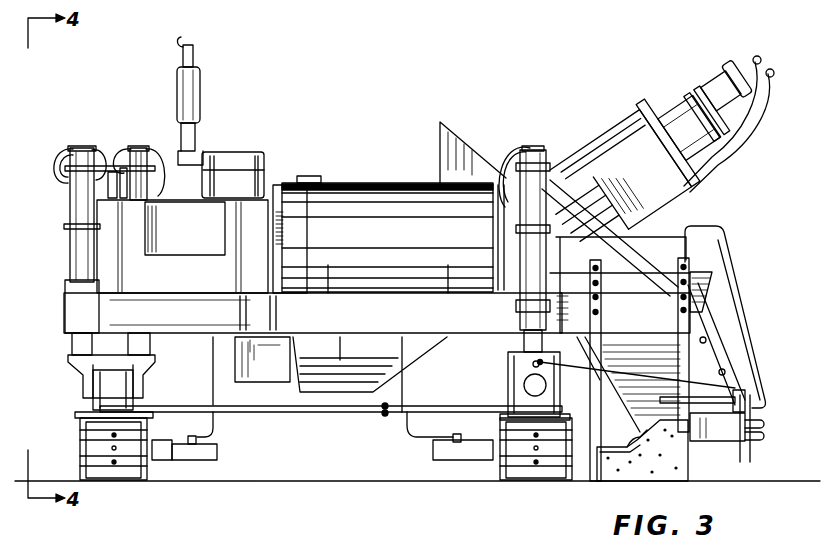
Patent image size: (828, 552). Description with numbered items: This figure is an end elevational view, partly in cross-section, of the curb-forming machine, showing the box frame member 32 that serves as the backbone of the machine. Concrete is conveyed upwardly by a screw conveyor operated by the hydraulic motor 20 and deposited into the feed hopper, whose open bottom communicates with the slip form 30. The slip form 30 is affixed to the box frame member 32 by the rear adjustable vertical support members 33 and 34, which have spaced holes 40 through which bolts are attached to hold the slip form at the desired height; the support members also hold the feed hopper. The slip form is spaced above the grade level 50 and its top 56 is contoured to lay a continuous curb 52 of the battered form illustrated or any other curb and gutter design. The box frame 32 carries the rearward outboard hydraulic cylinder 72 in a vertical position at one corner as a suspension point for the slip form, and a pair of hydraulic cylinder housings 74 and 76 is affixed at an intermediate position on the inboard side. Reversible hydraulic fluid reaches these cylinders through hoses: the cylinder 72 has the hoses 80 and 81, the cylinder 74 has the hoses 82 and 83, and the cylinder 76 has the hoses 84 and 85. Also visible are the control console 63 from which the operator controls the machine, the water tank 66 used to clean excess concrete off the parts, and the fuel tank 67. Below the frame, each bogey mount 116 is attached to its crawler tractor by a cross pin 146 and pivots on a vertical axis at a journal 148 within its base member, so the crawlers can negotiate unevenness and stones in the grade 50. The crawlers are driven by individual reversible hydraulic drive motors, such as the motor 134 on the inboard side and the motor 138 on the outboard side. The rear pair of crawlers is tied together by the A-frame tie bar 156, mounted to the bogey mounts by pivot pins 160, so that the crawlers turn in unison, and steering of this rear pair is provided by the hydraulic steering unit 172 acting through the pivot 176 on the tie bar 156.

The hydraulic motor 20 is at (742, 70).
The slip form 30 is at (690, 455).
The box frame member 32 is at (279, 318).
The adjustable vertical support member 33 is at (604, 266).
The adjustable vertical support member 34 is at (690, 264).
The spaced holes 40 is at (692, 301).
The grade level 50 is at (338, 481).
The continuous curb 52 is at (661, 467).
The contoured top of slip form 56 is at (634, 450).
The control console 63 is at (466, 130).
The water tank 66 is at (360, 183).
The fuel tank 67 is at (263, 194).
The rearward outboard hydraulic cylinder 72 is at (546, 152).
The hydraulic cylinder housing 74 is at (82, 145).
The hydraulic cylinder housing 76 is at (176, 205).
The hydraulic hose 80 is at (503, 140).
The hydraulic hose 81 is at (511, 153).
The hydraulic hose 82 is at (70, 150).
The hydraulic hose 83 is at (130, 142).
The hydraulic hose 84 is at (165, 148).
The hydraulic hose 85 is at (170, 140).
The bogey mount 116 is at (74, 414).
The hydraulic drive motor 134 is at (216, 452).
The hydraulic drive motor 138 is at (442, 458).
The cross pin 146 is at (78, 448).
The journal 148 is at (93, 390).
The tie bar 156 is at (178, 406).
The pivot pin 160 is at (128, 388).
The hydraulic steering unit 172 is at (447, 400).
The pivot 176 is at (385, 418).